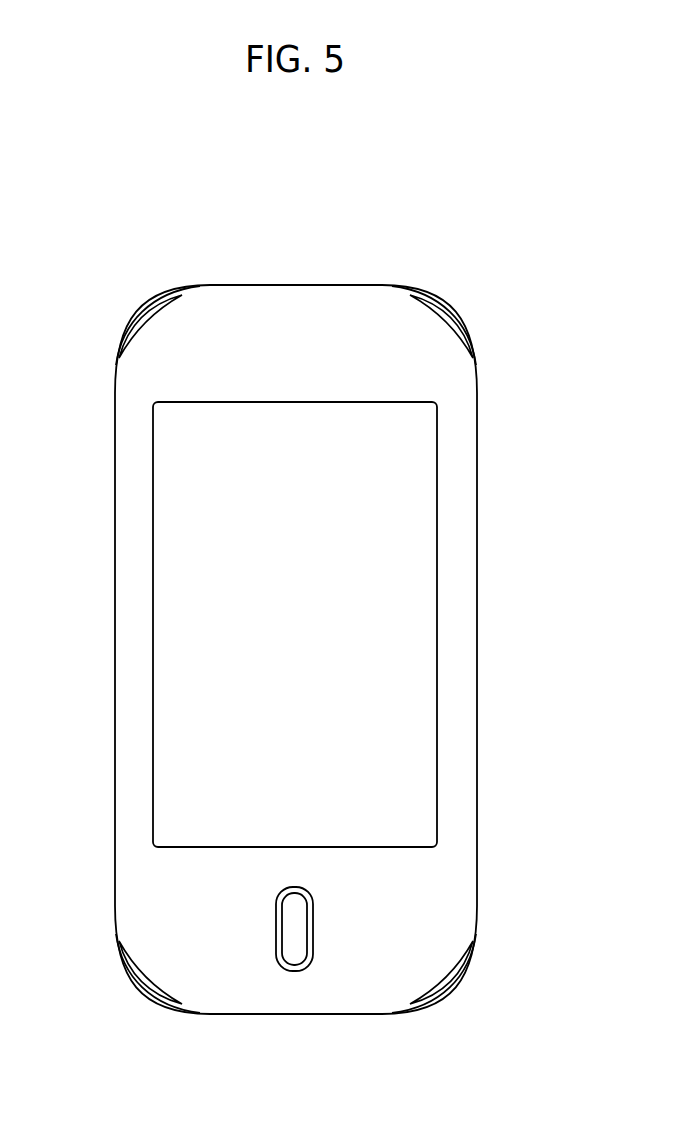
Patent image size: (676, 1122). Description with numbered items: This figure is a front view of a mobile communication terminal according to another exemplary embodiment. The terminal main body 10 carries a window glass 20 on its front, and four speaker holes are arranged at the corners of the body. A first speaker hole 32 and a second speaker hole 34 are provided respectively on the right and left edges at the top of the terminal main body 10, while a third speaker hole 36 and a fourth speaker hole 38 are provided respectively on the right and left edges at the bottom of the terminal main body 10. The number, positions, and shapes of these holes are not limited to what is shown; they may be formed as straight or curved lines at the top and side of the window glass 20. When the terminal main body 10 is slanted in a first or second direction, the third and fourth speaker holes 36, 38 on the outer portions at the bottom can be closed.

The terminal main body 10 is at (477, 423).
The window glass 20 is at (338, 328).
The first speaker hole 32 is at (142, 318).
The second speaker hole 34 is at (460, 313).
The third speaker hole 36 is at (140, 990).
The fourth speaker hole 38 is at (445, 985).